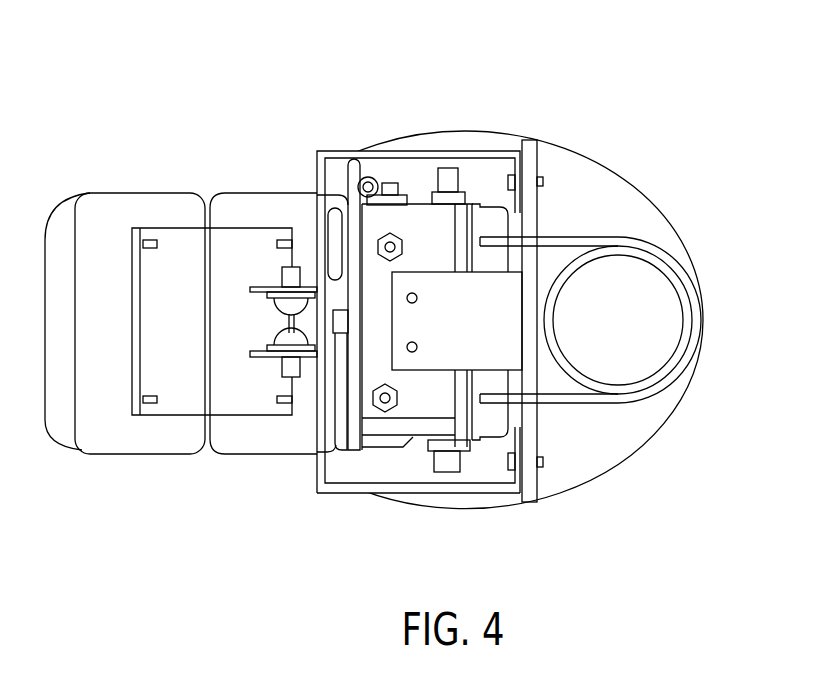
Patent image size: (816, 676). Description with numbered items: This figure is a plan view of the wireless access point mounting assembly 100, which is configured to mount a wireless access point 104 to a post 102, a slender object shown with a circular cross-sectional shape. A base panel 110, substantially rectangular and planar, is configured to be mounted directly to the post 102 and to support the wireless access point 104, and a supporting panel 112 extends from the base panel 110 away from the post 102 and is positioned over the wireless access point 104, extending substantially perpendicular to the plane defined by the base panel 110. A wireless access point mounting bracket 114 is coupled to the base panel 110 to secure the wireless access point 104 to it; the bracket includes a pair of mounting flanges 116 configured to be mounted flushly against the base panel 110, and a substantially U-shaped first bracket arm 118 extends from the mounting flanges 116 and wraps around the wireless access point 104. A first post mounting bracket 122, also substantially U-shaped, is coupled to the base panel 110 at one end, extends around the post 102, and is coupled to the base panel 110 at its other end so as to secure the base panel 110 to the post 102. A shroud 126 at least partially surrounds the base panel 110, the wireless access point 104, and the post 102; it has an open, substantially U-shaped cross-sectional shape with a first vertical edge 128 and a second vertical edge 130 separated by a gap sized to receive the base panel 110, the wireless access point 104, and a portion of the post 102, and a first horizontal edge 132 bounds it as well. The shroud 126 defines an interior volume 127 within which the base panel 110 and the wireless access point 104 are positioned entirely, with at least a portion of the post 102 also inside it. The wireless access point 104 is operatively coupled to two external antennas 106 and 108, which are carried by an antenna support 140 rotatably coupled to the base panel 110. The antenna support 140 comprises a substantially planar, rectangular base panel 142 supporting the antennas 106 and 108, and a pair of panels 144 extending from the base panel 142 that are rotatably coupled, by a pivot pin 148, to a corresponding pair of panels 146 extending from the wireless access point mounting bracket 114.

The wireless access point mounting assembly 100 is at (210, 76).
The post 102 is at (656, 303).
The wireless access point 104 is at (422, 222).
The antenna 106 is at (92, 205).
The antenna 108 is at (230, 207).
The base panel 110 is at (528, 415).
The supporting panel 112 is at (497, 299).
The wireless access point mounting bracket 114 is at (457, 510).
The mounting flanges 116 is at (525, 188).
The first bracket arm 118 is at (362, 158).
The first post mounting bracket 122 is at (596, 244).
The shroud 126 is at (605, 166).
The interior volume 127 is at (397, 475).
The first vertical edge 128 is at (328, 150).
The second vertical edge 130 is at (347, 493).
The first horizontal edge 132 is at (610, 474).
The antenna support 140 is at (166, 243).
The base panel 142 is at (152, 307).
The panels 144 is at (250, 290).
The panels 146 is at (317, 288).
The pivot pin 148 is at (283, 309).